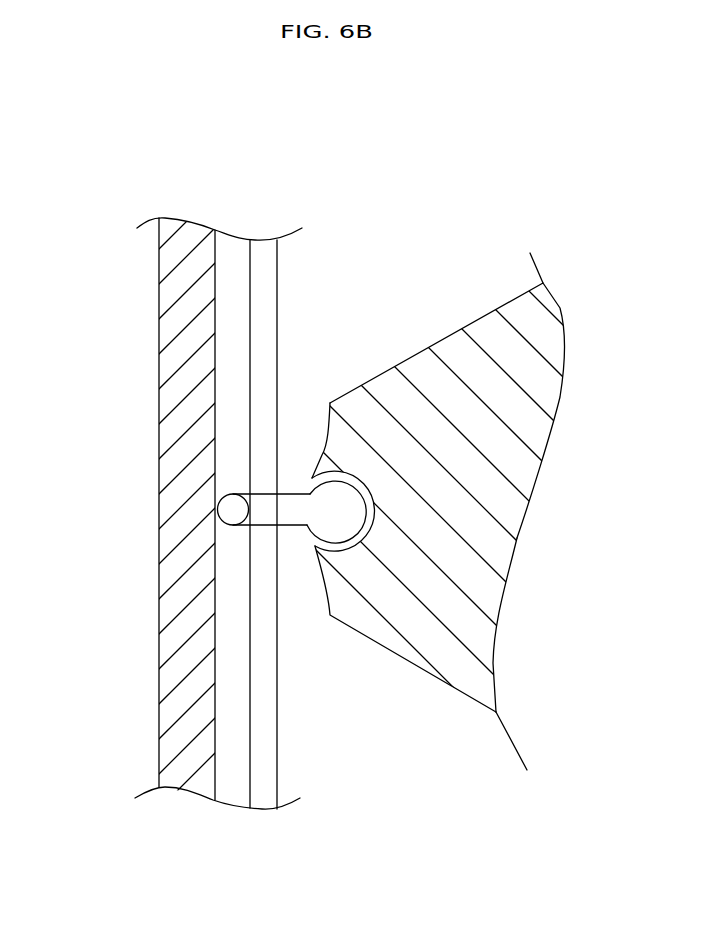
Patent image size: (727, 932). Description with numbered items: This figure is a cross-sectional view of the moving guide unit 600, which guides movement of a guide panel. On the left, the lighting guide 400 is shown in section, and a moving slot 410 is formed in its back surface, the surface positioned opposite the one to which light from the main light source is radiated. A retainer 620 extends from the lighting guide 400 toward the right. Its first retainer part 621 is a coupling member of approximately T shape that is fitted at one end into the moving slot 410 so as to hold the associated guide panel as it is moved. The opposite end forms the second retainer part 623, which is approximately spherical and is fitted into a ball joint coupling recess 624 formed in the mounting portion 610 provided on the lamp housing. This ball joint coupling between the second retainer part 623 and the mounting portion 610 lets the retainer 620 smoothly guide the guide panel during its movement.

The moving guide unit 600 is at (77, 132).
The lighting guide 400 is at (175, 603).
The moving slot 410 is at (231, 264).
The mounting portion 610 is at (477, 520).
The retainer 620 is at (283, 517).
The first retainer part 621 is at (233, 511).
The second retainer part 623 is at (490, 597).
The ball joint coupling recess 624 is at (368, 482).